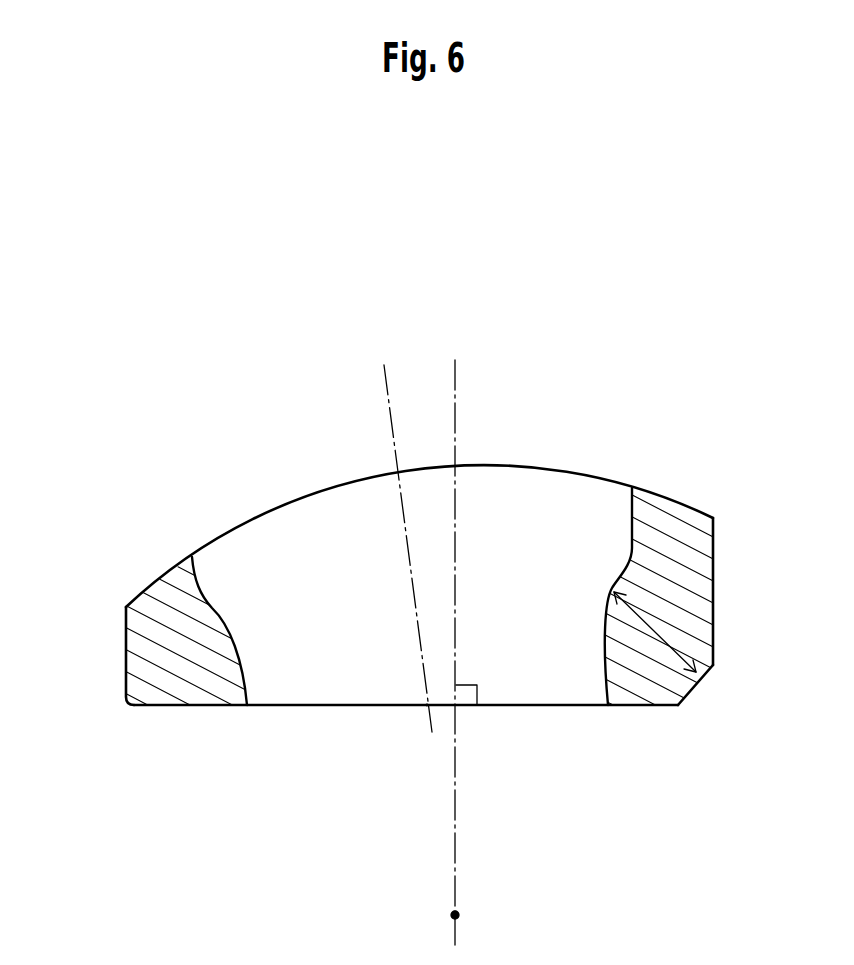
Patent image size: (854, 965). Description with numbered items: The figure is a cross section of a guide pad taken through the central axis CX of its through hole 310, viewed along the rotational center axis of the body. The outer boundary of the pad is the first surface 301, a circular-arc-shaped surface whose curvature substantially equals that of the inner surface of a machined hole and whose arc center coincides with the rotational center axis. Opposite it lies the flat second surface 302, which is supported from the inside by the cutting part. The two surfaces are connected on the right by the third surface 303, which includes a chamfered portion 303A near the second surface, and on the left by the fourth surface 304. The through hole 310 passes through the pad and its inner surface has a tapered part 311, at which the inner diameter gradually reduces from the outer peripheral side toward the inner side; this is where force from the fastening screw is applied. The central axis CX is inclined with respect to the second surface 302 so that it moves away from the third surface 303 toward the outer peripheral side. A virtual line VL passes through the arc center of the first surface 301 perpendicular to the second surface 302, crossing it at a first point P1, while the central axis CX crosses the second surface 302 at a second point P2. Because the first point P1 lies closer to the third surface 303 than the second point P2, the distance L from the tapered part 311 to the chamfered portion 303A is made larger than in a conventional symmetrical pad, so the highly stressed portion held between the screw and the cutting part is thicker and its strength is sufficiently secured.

The first surface 301 is at (247, 523).
The second surface 302 is at (202, 706).
The third surface 303 is at (714, 588).
The chamfered portion 303A is at (690, 688).
The fourth surface 304 is at (126, 662).
The through hole 310 is at (528, 486).
The tapered part 311 is at (612, 588).
The distance L is at (655, 630).
The virtual line VL is at (456, 386).
The central axis CX is at (387, 392).
The first point P1 is at (456, 706).
The second point P2 is at (427, 705).